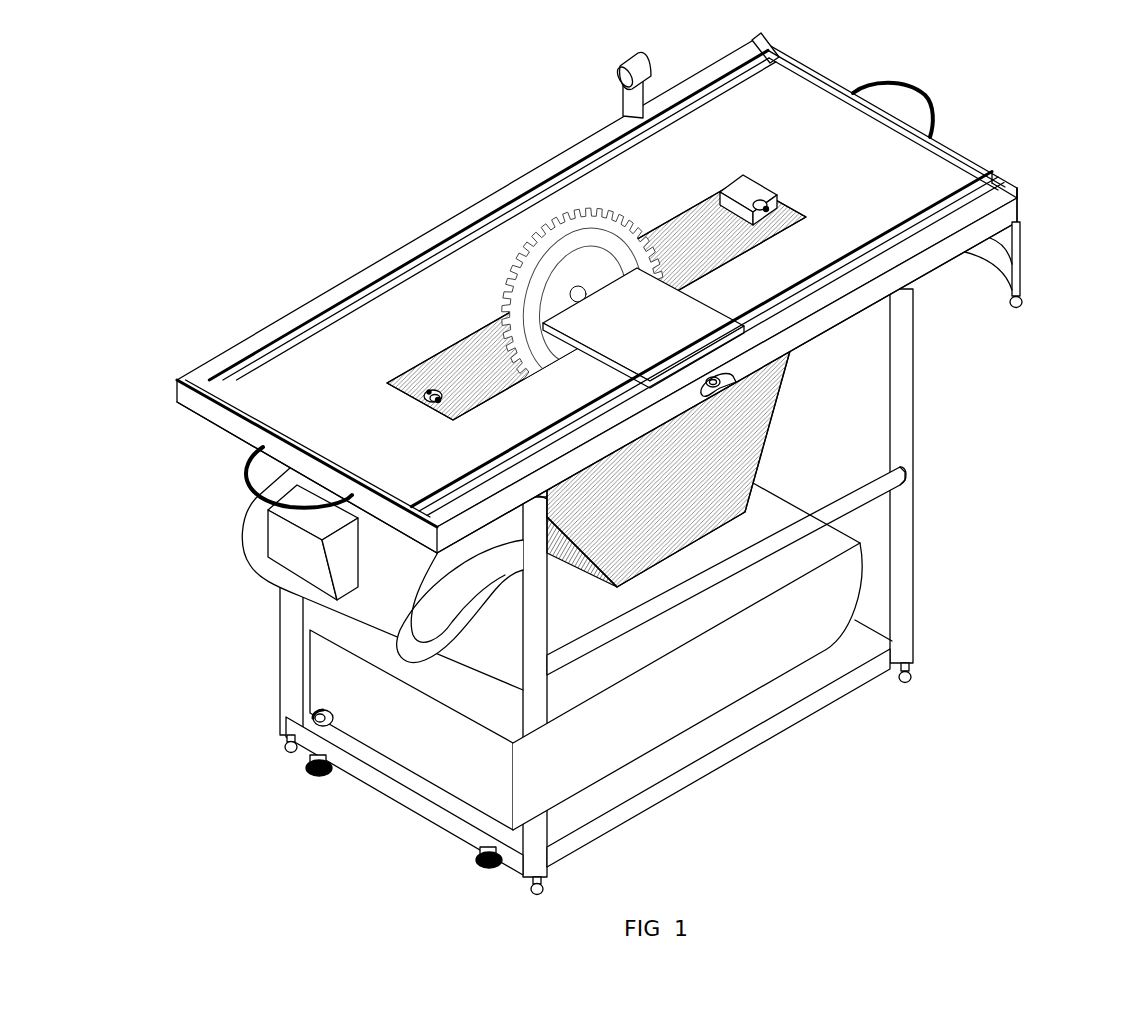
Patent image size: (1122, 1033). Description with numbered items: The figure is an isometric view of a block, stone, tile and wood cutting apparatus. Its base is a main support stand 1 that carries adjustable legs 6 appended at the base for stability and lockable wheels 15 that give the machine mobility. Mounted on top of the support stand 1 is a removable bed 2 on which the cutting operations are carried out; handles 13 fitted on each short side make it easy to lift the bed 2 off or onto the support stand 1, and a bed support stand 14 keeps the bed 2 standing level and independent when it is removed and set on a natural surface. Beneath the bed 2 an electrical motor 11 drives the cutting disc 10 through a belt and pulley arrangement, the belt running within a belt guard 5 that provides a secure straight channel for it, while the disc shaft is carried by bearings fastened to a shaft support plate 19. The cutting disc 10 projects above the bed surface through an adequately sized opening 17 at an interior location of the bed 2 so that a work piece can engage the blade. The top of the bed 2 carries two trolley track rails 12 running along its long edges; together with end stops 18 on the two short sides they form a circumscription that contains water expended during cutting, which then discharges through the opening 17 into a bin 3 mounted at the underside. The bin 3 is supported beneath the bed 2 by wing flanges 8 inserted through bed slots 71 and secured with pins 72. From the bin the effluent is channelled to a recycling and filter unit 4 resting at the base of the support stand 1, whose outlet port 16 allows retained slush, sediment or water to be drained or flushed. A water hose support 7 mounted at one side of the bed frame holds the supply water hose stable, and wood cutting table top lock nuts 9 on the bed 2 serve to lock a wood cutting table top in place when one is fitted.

The main support stand 1 is at (905, 490).
The removable bed 2 is at (312, 377).
The bin 3 is at (700, 485).
The recycling and filter unit 4 is at (750, 683).
The belt guard 5 is at (504, 558).
The adjustable legs 6 is at (287, 750).
The water hose support 7 is at (642, 62).
The wing flanges 8 is at (760, 203).
The wood cutting table top lock nuts 9 is at (730, 384).
The cutting disc 10 is at (512, 280).
The electrical motor 11 is at (250, 563).
The trolley track rails 12 is at (515, 193).
The handles 13 is at (250, 474).
The bed support stand 14 is at (1022, 240).
The lockable wheels 15 is at (318, 772).
The outlet port 16 is at (325, 722).
The opening 17 is at (692, 187).
The end stops 18 is at (228, 413).
The shaft support plate 19 is at (640, 360).
The bed slots 71 is at (760, 208).
The pins 72 is at (768, 206).